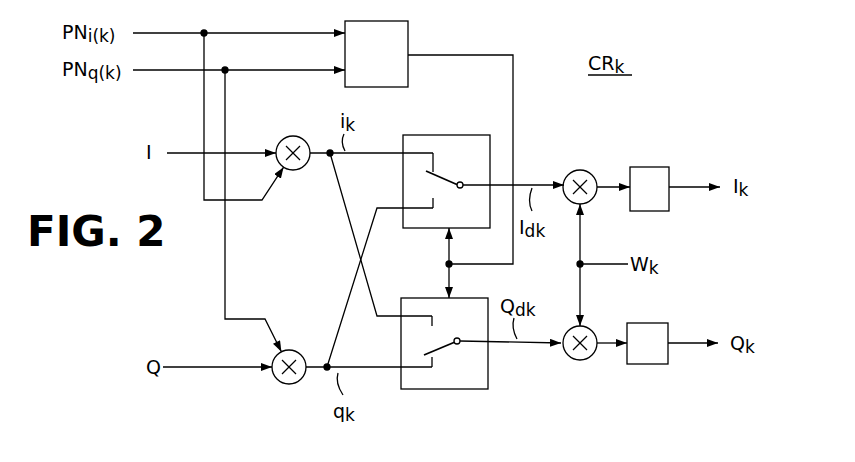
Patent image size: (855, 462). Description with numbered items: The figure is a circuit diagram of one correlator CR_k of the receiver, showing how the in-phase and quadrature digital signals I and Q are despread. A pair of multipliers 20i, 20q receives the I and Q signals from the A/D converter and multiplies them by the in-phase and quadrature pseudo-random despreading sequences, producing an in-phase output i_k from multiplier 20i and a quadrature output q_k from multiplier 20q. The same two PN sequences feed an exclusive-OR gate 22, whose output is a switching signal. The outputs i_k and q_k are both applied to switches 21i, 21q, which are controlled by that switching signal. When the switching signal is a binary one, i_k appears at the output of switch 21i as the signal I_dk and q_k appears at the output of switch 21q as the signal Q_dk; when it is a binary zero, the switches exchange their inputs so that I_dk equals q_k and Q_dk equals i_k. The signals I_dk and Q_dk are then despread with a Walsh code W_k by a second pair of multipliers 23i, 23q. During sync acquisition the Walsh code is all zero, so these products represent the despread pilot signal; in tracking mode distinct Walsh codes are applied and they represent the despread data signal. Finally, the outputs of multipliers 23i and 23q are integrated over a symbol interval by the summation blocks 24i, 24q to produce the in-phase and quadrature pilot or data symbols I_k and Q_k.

The multiplier 20i is at (292, 134).
The multiplier 20q is at (293, 385).
The switch 21i is at (452, 135).
The switch 21q is at (441, 390).
The XOR gate 22 is at (408, 43).
The multiplier 23i is at (580, 170).
The multiplier 23q is at (572, 362).
The in-phase accumulator 24i is at (648, 167).
The quadrature accumulator 24q is at (645, 365).